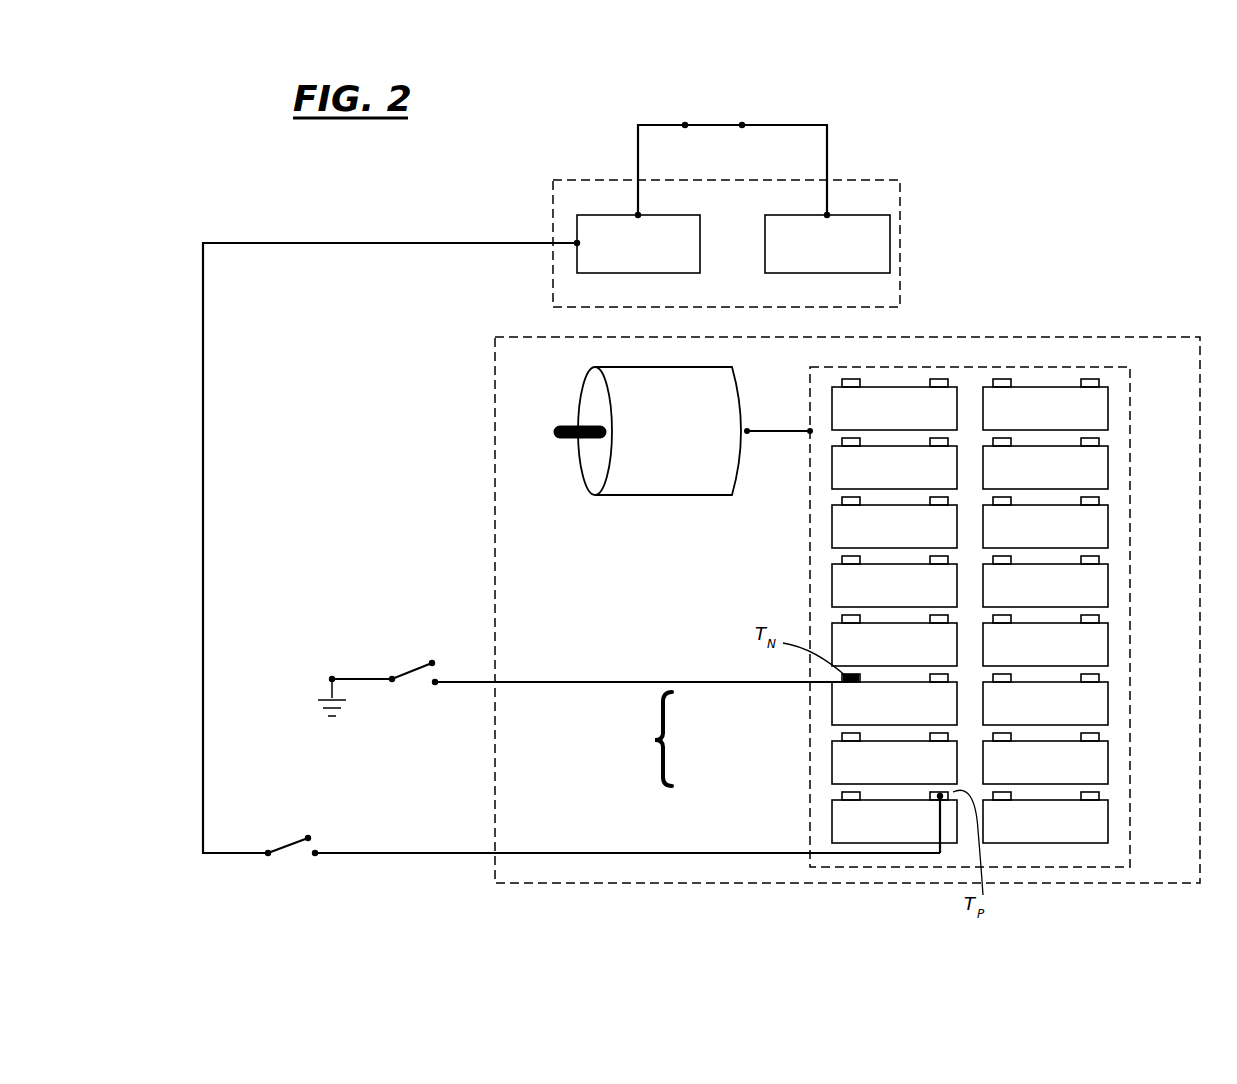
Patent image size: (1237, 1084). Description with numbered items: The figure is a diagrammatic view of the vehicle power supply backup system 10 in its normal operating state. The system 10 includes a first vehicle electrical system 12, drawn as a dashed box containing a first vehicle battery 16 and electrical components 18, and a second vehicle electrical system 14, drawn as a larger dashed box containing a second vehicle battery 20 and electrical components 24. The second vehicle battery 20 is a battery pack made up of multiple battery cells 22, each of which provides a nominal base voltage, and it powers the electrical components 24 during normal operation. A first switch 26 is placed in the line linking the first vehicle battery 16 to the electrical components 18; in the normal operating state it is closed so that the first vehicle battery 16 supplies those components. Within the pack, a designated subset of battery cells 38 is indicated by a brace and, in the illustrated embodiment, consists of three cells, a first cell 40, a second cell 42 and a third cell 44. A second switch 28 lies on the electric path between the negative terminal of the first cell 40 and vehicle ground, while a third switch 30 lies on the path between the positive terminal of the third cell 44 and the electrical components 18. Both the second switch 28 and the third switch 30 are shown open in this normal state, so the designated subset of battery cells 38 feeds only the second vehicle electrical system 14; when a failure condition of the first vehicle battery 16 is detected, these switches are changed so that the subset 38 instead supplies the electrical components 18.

The vehicle power supply backup system 10 is at (528, 126).
The first vehicle electrical system 12 is at (895, 180).
The second vehicle electrical system 14 is at (1035, 337).
The first vehicle battery 16 is at (841, 256).
The electrical components 18 is at (653, 256).
The second vehicle battery 20 is at (1130, 468).
The battery cells 22 is at (908, 422).
The electrical components 24 is at (684, 445).
The first switch 26 is at (713, 125).
The second switch 28 is at (422, 665).
The third switch 30 is at (294, 845).
The designated subset of battery cells 38 is at (647, 739).
The first cell 40 is at (830, 692).
The second cell 42 is at (830, 757).
The third cell 44 is at (830, 822).